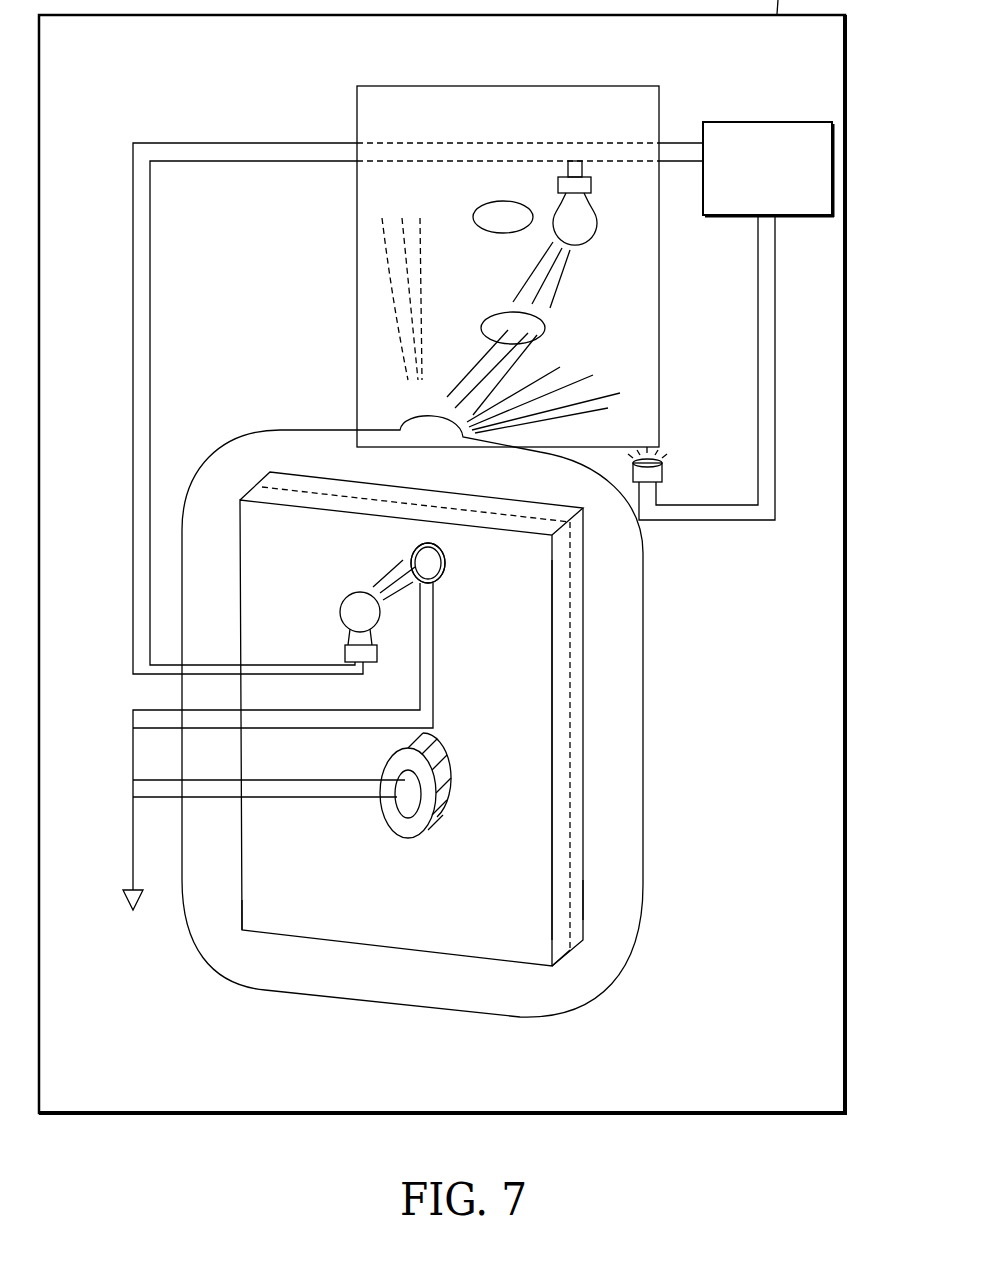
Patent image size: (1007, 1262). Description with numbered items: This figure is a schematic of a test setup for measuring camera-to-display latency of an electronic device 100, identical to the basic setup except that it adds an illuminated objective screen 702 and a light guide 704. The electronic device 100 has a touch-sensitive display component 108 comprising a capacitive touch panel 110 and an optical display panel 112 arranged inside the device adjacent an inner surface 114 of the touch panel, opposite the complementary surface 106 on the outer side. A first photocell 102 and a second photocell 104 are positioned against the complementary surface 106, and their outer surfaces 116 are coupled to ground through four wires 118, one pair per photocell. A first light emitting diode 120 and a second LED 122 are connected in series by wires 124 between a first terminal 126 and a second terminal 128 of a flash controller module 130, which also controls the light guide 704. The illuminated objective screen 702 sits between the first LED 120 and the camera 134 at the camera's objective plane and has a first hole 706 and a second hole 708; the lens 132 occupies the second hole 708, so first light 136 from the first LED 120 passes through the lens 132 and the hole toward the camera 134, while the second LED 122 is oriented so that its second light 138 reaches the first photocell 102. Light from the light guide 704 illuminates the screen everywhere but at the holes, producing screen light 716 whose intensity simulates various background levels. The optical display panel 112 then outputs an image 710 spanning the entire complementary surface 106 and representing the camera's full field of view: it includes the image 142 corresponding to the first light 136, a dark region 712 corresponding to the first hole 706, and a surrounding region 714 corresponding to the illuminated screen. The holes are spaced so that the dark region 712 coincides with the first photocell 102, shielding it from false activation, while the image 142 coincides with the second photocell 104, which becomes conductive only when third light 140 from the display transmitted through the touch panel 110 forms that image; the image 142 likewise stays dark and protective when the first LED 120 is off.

The electronic device 100 is at (645, 622).
The first photocell 102 is at (434, 583).
The second photocell 104 is at (415, 785).
The complementary surface 106 is at (484, 904).
The touch-sensitive display component 108 is at (588, 897).
The touch panel 110 is at (333, 897).
The optical display panel 112 is at (572, 797).
The inner surface 114 is at (567, 935).
The outer surfaces 116 is at (442, 557).
The wires 118 is at (151, 710).
The first light emitting diode 120 is at (595, 225).
The second LED 122 is at (340, 612).
The wires 124 is at (205, 142).
The first terminal 126 is at (700, 163).
The second terminal 128 is at (700, 142).
The flash controller module 130 is at (770, 122).
The lens 132 is at (540, 332).
The camera 134 is at (432, 418).
The first light 136 is at (540, 270).
The second light 138 is at (388, 578).
The third light 140 is at (453, 808).
The image 142 is at (408, 840).
The illuminated objective screen 702 is at (386, 86).
The light guide 704 is at (670, 468).
The first hole 706 is at (478, 210).
The second hole 708 is at (547, 322).
The image 710 is at (232, 920).
The dark region 712 is at (446, 565).
The surrounding region 714 is at (504, 689).
The screen light 716 is at (422, 278).